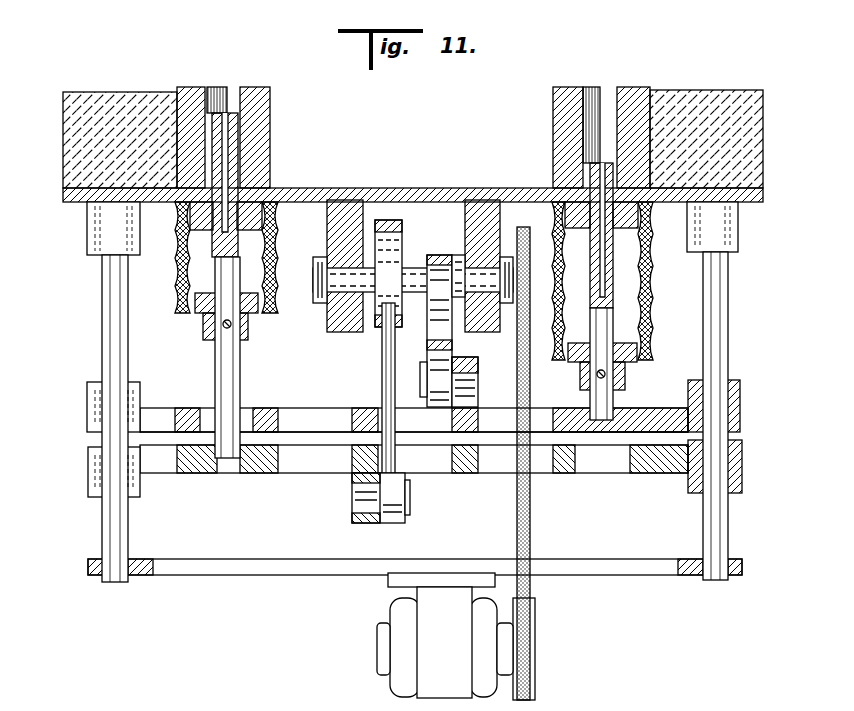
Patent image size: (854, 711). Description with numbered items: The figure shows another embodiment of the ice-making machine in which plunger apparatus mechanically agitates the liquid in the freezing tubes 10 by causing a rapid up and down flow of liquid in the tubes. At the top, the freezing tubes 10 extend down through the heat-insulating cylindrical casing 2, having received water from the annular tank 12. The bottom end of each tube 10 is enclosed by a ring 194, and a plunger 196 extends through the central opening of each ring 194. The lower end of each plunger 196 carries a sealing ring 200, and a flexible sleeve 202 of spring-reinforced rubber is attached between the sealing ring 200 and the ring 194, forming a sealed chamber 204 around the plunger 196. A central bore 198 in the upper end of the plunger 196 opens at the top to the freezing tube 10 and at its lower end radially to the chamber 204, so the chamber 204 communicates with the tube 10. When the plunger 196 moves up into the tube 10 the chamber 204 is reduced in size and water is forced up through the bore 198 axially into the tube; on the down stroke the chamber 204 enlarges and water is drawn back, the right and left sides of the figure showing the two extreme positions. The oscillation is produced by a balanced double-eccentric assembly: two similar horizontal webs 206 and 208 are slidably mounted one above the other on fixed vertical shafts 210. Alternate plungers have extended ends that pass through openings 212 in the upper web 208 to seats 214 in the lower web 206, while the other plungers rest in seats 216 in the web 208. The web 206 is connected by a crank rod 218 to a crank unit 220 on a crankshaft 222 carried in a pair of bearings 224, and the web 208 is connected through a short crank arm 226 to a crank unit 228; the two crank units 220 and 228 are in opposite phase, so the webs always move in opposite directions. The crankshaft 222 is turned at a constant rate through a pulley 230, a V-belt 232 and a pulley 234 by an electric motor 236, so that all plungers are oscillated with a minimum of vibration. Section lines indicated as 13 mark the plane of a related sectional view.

The cylindrical casing 2 is at (98, 110).
The freezing tube 10 is at (237, 96).
The annular tank 12 is at (452, 161).
The section line 13- 13 is at (77, 537).
The ring 194 is at (258, 216).
The plunger 196 is at (222, 348).
The central bore 198 is at (225, 148).
The sealing ring 200 is at (250, 327).
The flexible sleeve 202 is at (176, 282).
The sealed chamber 204 is at (198, 263).
The horizontal web 206 is at (143, 457).
The horizontal web 208 is at (140, 416).
The fixed vertical shaft 210 is at (112, 329).
The opening 212 is at (187, 410).
The seat 214 is at (195, 473).
The seat 216 is at (592, 417).
The crank rod 218 is at (386, 384).
The crank unit 220 is at (405, 225).
The crankshaft 222 is at (413, 273).
The bearing 224 is at (345, 220).
The short crank arm 226 is at (452, 335).
The crank unit 228 is at (425, 334).
The pulley 230 is at (533, 238).
The V-belt 232 is at (527, 490).
The pulley 234 is at (537, 627).
The electric motor 236 is at (400, 617).